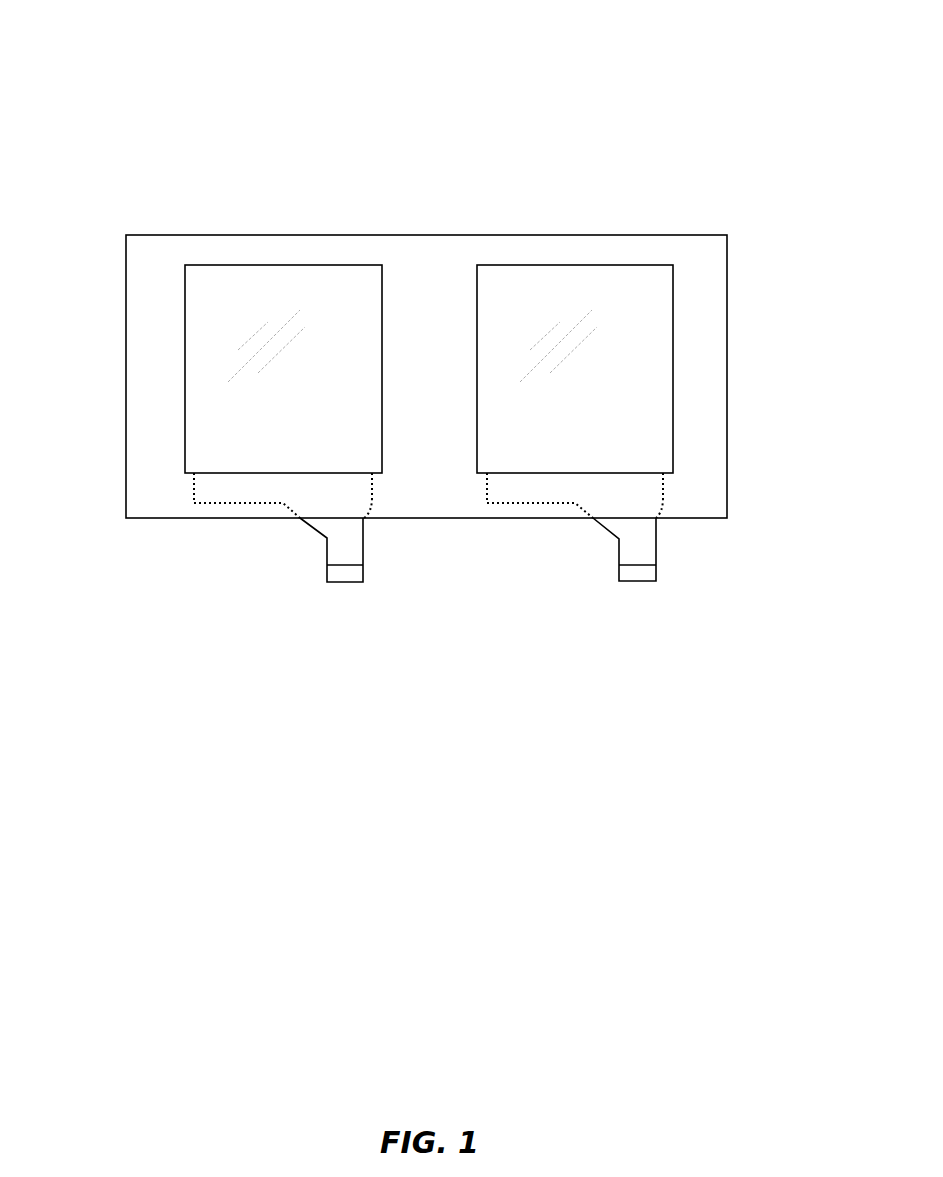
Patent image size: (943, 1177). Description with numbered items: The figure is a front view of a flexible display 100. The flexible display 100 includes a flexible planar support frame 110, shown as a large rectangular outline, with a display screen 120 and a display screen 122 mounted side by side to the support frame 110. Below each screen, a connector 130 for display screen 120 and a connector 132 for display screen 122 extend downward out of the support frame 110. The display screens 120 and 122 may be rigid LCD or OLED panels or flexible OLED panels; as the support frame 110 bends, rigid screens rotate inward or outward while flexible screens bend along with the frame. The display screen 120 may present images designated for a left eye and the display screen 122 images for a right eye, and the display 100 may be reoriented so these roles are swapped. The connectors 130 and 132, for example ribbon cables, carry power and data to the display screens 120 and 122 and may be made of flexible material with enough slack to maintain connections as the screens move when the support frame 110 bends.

The flexible display 100 is at (117, 84).
The flexible planar support frame 110 is at (707, 257).
The display screen 120 is at (257, 285).
The display screen 122 is at (557, 287).
The connector 130 is at (326, 548).
The connector 132 is at (618, 550).